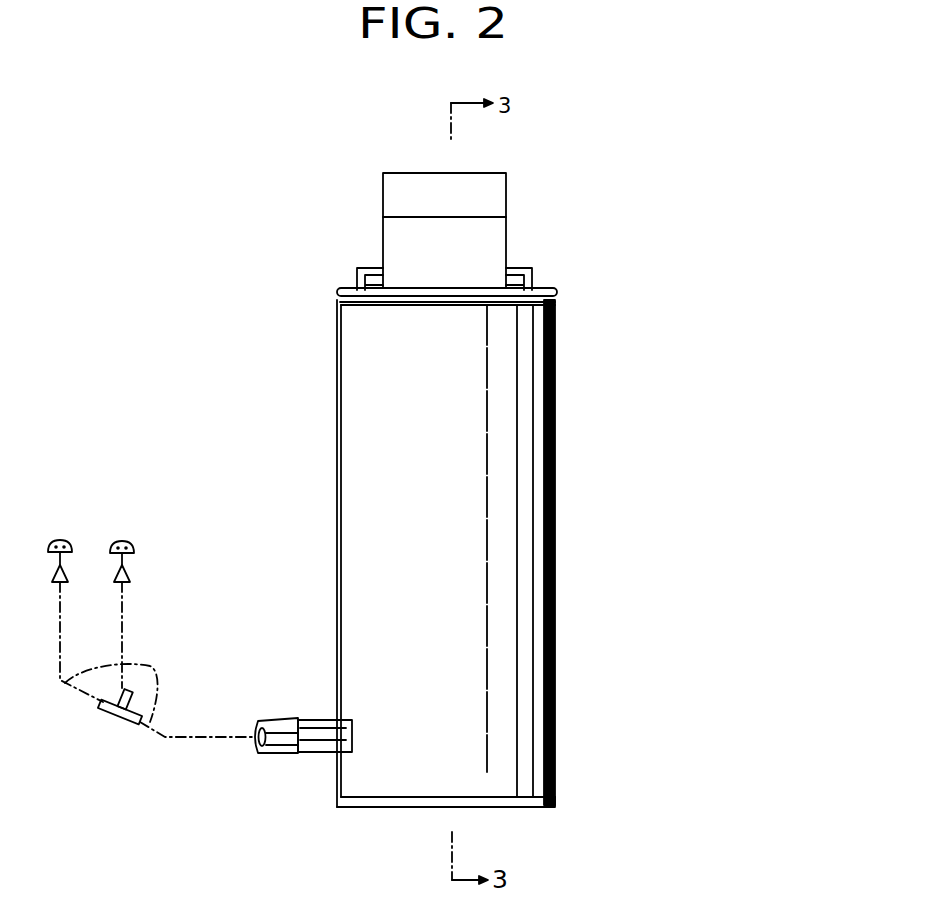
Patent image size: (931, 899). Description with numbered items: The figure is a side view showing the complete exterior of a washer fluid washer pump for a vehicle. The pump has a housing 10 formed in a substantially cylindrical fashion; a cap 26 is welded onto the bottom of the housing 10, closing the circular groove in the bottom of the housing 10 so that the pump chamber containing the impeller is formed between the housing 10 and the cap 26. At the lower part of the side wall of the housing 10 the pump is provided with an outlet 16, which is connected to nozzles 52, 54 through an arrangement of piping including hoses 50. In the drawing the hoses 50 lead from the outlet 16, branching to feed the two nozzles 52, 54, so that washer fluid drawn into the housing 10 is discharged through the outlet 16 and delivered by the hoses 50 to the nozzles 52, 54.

The housing 10 is at (555, 497).
The outlet 16 is at (262, 753).
The cap 26 is at (528, 807).
The hoses 50 is at (158, 658).
The nozzle 52 is at (68, 544).
The nozzle 54 is at (135, 549).